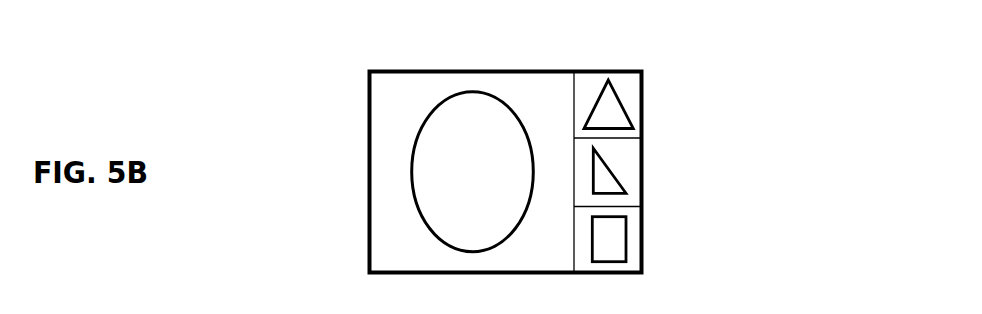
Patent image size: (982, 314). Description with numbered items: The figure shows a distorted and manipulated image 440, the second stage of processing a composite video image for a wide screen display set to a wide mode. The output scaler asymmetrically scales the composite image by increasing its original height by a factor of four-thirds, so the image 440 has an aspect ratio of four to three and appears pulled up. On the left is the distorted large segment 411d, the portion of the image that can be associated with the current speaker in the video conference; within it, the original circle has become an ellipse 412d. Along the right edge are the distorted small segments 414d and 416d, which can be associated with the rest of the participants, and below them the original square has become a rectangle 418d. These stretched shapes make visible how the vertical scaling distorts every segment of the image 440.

The distorted and manipulated image 440 is at (773, 105).
The distorted large segment 411d is at (387, 222).
The ellipse 412d is at (414, 170).
The distorted small segment 414d is at (633, 129).
The distorted small segment 416d is at (626, 192).
The rectangle 418d is at (627, 260).